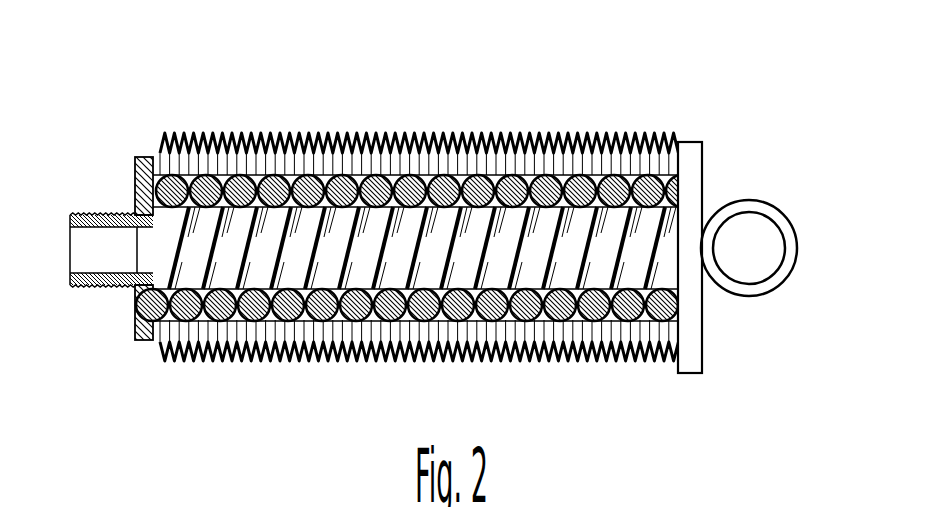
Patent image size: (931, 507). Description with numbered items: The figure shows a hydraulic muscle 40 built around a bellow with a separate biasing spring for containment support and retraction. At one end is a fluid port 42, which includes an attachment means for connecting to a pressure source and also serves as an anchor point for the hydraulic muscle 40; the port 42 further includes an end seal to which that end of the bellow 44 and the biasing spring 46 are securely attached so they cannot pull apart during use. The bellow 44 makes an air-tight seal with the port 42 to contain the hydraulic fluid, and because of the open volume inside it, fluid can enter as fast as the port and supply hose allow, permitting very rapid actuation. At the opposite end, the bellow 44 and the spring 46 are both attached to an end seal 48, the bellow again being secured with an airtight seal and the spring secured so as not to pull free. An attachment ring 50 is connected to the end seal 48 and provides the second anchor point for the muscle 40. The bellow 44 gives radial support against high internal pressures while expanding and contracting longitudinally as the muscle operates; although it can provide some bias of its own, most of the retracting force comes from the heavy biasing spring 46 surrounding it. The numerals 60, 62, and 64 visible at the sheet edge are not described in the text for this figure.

The hydraulic muscle 40 is at (618, 98).
The fluid port 42 is at (103, 215).
The bellow 44 is at (222, 138).
The biasing spring 46 is at (245, 317).
The end seal 48 is at (702, 328).
The attachment ring 50 is at (764, 202).
The component of adjacent figure 60 is at (690, 506).
The component of adjacent figure 62 is at (54, 497).
The component of adjacent figure 64 is at (190, 497).